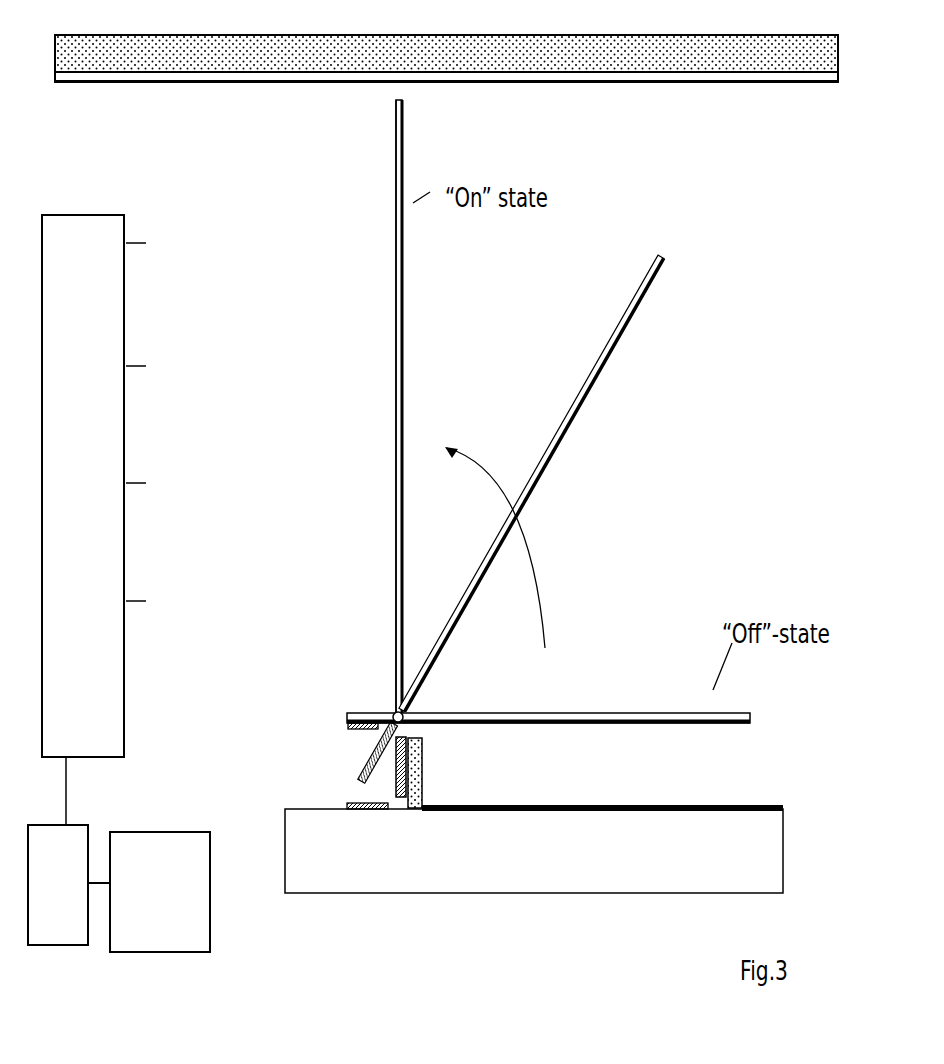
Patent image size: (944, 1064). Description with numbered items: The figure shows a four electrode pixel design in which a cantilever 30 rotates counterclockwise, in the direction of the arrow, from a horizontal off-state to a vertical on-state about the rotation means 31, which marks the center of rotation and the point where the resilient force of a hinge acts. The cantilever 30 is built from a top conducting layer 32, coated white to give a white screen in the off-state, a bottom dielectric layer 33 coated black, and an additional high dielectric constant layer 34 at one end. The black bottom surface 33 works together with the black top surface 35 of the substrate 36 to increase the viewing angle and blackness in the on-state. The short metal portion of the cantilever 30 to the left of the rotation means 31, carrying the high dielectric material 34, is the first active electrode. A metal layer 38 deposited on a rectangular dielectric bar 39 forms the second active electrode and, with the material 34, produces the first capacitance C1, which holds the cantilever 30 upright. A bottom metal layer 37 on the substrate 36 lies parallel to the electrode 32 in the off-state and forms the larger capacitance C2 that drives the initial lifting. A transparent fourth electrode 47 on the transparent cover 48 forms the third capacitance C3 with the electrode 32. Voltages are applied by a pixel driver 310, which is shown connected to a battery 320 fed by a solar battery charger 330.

The cantilever 30 is at (760, 717).
The rotation means 31 is at (395, 712).
The top conducting layer 32 is at (393, 283).
The bottom dielectric layer 33 is at (403, 308).
The additional dielectric layer 34 is at (357, 728).
The top surface of the substrate 35 is at (618, 805).
The substrate 36 is at (540, 865).
The bottom metal layer 37 is at (378, 810).
The metal layer 38 is at (405, 800).
The rectangular dielectric bar 39 is at (413, 777).
The fourth electrode 47 is at (718, 80).
The transparent cover 48 is at (563, 43).
The pixel driver element 310 is at (124, 657).
The battery 320 is at (57, 958).
The solar battery charger 330 is at (128, 957).
The first capacitance C1 is at (387, 770).
The second capacitance C2 is at (342, 758).
The third pixel capacitance C3 is at (672, 380).